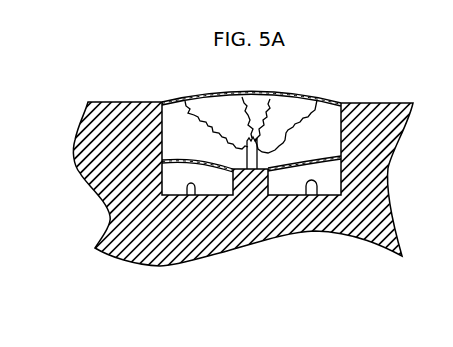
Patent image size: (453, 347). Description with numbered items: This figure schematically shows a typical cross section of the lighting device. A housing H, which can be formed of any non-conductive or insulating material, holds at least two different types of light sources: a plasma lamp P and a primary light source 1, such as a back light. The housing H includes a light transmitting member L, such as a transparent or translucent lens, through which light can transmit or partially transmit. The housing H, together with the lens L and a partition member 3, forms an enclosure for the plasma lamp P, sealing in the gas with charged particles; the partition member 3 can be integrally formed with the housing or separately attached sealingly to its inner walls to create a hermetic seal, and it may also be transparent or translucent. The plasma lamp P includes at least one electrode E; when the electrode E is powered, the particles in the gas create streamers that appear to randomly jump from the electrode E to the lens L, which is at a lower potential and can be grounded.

The primary light source 1 is at (187, 183).
The plasma lamp P is at (179, 138).
The light transmitting member L is at (207, 99).
The partition member 3 is at (319, 154).
The electrode E is at (256, 141).
The housing H is at (179, 248).